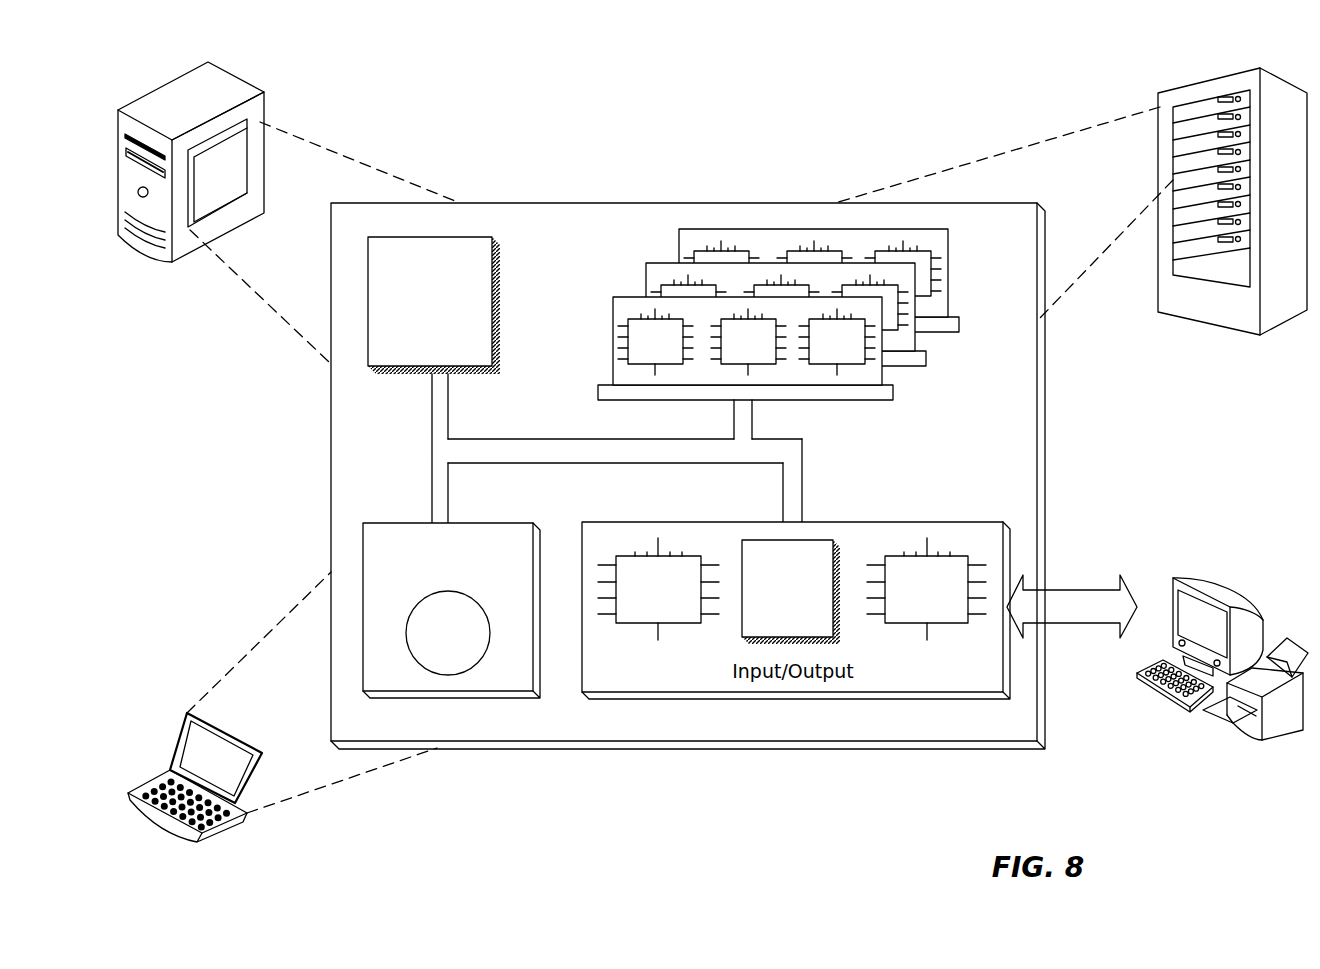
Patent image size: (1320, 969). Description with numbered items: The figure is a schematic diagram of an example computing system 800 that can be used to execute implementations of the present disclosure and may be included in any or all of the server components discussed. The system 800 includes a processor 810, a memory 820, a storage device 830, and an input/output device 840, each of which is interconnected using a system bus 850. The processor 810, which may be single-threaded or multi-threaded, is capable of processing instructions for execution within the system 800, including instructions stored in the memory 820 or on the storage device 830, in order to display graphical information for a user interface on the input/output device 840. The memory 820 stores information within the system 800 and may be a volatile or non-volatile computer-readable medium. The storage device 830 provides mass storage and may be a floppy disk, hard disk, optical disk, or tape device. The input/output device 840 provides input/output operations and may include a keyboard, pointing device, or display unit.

The computing system 800 is at (517, 125).
The processor 810 is at (434, 305).
The memory 820 is at (953, 364).
The storage device 830 is at (451, 610).
The input/output device 840 is at (1172, 582).
The system bus 850 is at (611, 454).